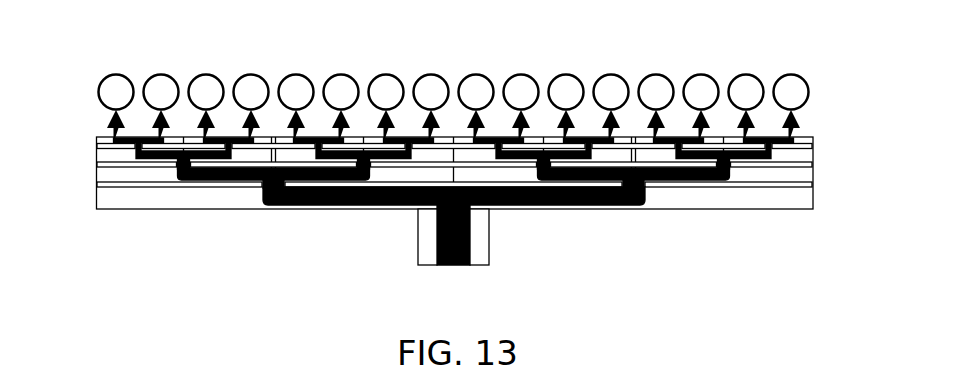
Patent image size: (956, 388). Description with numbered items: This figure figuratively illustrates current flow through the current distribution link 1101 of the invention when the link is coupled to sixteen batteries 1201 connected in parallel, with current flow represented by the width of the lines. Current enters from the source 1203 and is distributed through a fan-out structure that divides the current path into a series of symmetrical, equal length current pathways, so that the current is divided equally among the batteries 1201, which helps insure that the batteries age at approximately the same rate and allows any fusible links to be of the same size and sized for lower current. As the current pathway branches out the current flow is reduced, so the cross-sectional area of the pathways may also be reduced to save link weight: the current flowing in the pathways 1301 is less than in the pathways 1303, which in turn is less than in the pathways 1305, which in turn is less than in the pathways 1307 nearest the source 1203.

The current distribution link 1101 is at (721, 206).
The batteries 1201 is at (567, 74).
The source 1203 is at (505, 284).
The pathways 1301 is at (124, 146).
The pathways 1303 is at (150, 162).
The pathways 1305 is at (200, 187).
The pathways 1307 is at (338, 206).